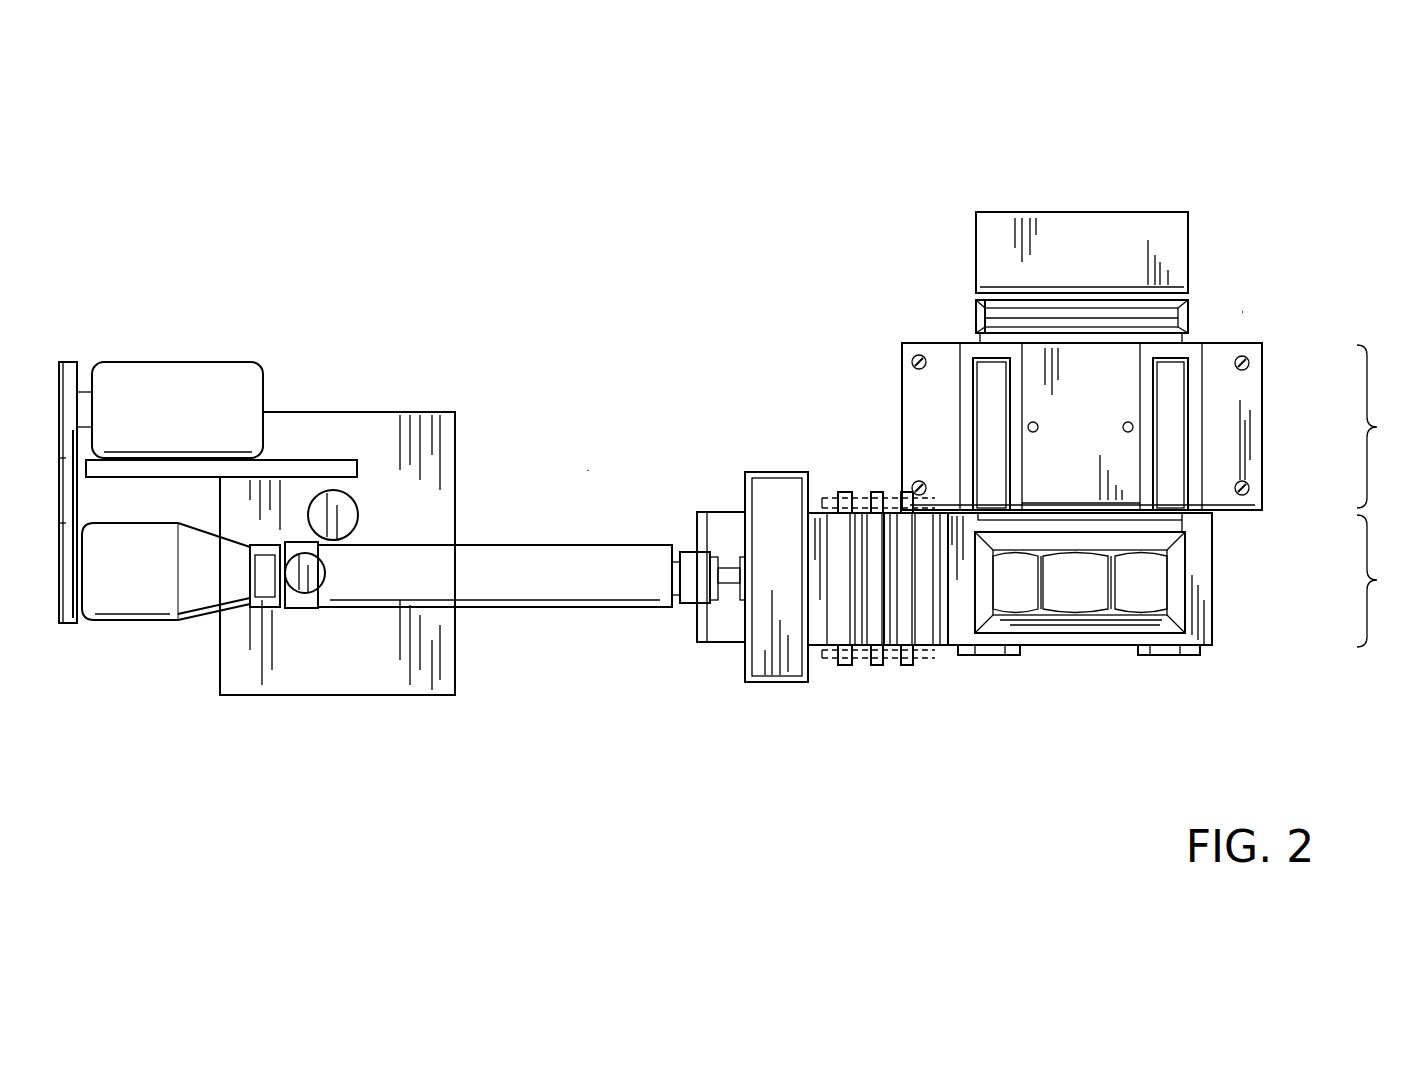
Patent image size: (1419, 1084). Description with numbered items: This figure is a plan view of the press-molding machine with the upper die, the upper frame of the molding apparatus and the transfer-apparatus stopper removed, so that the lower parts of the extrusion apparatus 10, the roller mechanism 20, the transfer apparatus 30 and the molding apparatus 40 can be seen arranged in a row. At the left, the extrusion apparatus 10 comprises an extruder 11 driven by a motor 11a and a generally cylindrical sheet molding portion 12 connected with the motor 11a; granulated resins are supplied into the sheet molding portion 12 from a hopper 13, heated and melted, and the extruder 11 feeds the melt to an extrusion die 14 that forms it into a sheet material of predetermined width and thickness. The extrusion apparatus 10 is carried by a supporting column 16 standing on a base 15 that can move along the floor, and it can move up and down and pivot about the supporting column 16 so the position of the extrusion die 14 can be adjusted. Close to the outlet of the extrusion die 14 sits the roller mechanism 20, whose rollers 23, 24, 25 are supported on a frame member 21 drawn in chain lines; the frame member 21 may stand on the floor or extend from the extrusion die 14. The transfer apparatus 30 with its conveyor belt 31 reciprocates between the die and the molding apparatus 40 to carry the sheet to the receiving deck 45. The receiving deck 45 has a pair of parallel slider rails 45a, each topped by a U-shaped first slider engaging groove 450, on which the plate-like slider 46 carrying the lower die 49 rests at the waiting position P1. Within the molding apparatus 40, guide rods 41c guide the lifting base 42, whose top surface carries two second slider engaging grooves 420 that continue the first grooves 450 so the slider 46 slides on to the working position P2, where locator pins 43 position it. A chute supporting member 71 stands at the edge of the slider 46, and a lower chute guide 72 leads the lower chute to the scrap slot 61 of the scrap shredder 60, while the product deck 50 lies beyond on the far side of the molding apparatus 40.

The extrusion apparatus 10 is at (588, 470).
The extruder 11 is at (131, 597).
The motor 11a is at (180, 393).
The sheet molding portion 12 is at (553, 585).
The hopper 13 is at (297, 605).
The extrusion die 14 is at (775, 490).
The base 15 is at (378, 428).
The supporting column 16 is at (340, 515).
The roller mechanism 20 is at (873, 596).
The frame member 21 is at (822, 668).
The roller 23 is at (838, 530).
The roller 24 is at (878, 520).
The roller 25 is at (907, 610).
The transfer apparatus 30 is at (688, 628).
The conveyor belt 31 is at (722, 640).
The molding apparatus 40 is at (1242, 312).
The guide rods 41c is at (913, 358).
The lifting base 42 is at (1243, 430).
The locator pins 43 is at (1125, 424).
The receiving deck 45 is at (1134, 625).
The slider rails 45a is at (963, 656).
The slider 46 is at (1205, 587).
The lower die 49 is at (1085, 605).
The product deck 50 is at (1077, 228).
The scrap shredder 60 is at (1185, 318).
The scrap slot 61 is at (1100, 318).
The chute supporting member 71 is at (1155, 525).
The lower chute guide 72 is at (1000, 333).
The second slider engaging grooves 420 is at (985, 410).
The first slider engaging groove 450 is at (988, 655).
The waiting position P1 is at (1388, 581).
The working position P2 is at (1388, 426).